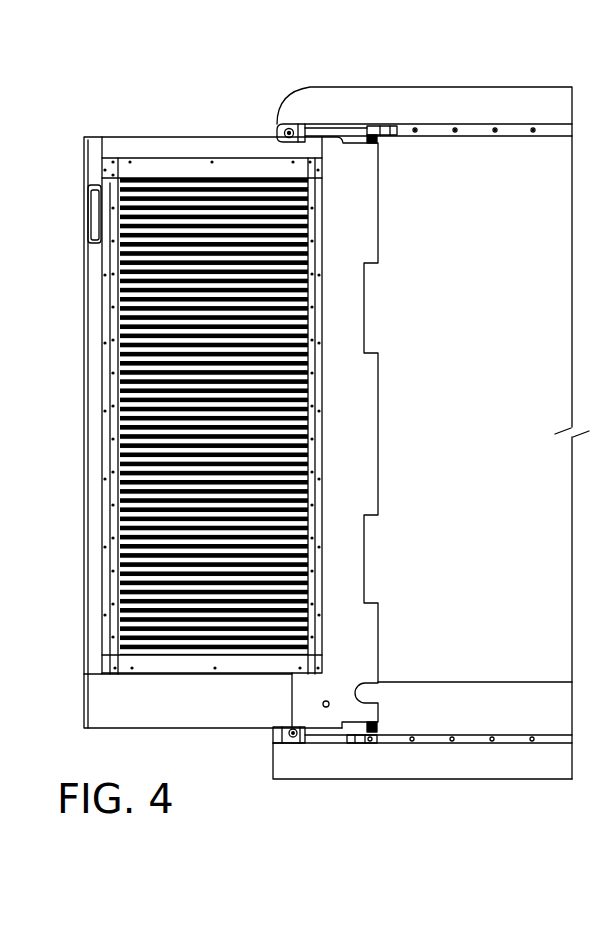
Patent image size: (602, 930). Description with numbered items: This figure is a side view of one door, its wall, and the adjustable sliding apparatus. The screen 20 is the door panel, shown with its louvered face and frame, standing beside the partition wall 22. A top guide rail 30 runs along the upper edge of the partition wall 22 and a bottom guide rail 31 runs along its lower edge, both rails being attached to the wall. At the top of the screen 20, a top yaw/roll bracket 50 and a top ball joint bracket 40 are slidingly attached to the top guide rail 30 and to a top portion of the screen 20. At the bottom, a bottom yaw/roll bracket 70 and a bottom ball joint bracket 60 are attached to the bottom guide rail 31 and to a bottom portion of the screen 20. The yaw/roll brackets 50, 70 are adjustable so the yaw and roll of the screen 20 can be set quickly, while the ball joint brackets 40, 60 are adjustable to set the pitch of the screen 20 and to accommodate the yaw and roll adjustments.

The screen 20 is at (130, 162).
The partition wall 22 is at (519, 100).
The top guide rail 30 is at (468, 123).
The bottom guide rail 31 is at (470, 736).
The top ball joint bracket 40 is at (383, 126).
The top yaw/roll bracket 50 is at (290, 125).
The bottom ball joint bracket 60 is at (358, 742).
The bottom yaw/roll bracket 70 is at (278, 742).